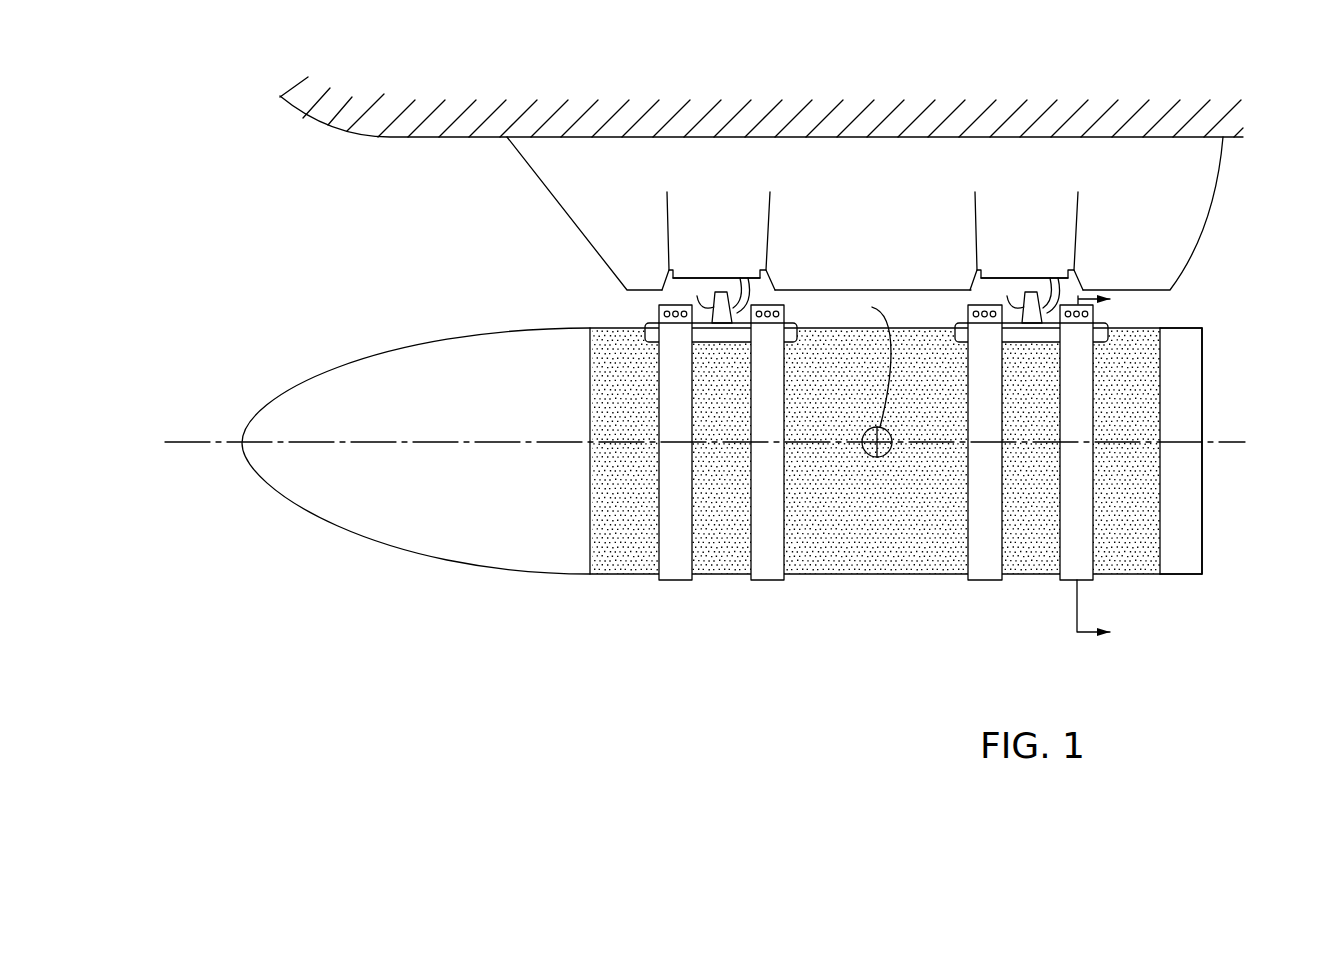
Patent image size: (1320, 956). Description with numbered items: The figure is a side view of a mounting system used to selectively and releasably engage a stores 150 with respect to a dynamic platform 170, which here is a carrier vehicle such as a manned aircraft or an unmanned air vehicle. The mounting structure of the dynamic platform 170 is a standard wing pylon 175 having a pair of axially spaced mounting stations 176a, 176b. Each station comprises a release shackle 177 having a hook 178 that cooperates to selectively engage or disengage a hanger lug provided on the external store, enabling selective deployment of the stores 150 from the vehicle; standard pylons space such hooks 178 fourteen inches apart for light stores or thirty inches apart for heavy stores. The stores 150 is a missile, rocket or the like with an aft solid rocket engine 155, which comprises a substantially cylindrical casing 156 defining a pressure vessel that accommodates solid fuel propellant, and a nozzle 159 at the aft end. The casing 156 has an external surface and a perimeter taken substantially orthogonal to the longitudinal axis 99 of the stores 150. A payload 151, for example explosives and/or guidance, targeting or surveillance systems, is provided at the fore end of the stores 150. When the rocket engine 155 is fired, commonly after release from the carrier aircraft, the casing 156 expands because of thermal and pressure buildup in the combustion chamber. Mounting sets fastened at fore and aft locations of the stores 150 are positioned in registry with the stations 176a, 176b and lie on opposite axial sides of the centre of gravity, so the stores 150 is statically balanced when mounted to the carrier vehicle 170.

The longitudinal axis 99 is at (212, 441).
The stores 150 is at (774, 476).
The payload 151 is at (363, 523).
The aft solid rocket engine 155 is at (1180, 555).
The casing 156 is at (876, 575).
The nozzle 159 is at (1202, 522).
The dynamic platform 170 is at (305, 122).
The wing pylon 175 is at (594, 202).
The mounting station 176a is at (726, 198).
The mounting station 176b is at (1026, 198).
The release shackle 177 is at (977, 238).
The hook 178 is at (1003, 297).